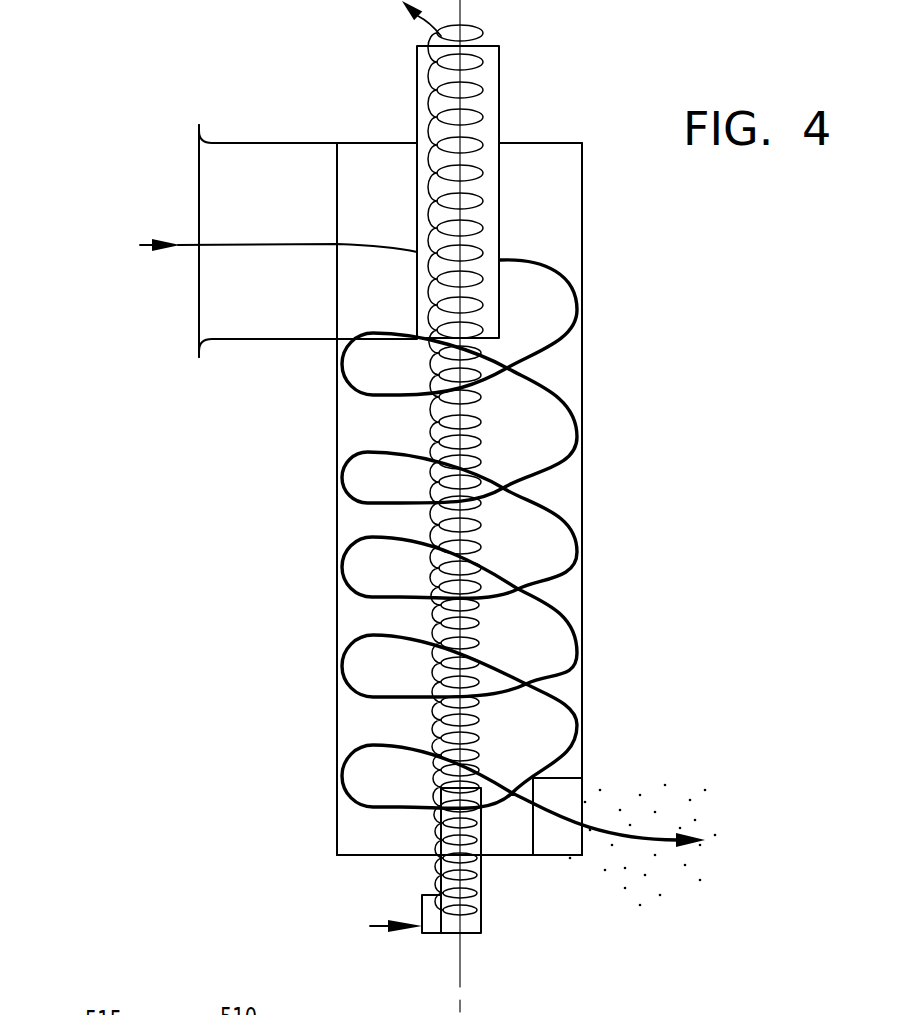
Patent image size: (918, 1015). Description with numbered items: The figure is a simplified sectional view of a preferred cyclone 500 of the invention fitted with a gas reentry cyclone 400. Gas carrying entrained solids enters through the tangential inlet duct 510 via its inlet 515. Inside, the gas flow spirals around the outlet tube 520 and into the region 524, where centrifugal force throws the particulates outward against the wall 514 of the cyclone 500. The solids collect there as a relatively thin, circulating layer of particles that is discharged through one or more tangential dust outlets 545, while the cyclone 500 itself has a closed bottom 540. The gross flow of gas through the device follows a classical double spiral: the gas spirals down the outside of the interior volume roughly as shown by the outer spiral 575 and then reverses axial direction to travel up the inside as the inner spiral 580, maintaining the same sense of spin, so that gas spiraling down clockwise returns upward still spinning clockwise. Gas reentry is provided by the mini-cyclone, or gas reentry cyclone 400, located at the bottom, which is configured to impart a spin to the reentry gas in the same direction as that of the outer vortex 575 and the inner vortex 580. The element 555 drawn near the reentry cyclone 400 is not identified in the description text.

The reentry cyclone 400 is at (482, 881).
The cyclone 500 is at (625, 530).
The tangential inlet duct 510 is at (267, 340).
The wall 514 is at (582, 617).
The inlet 515 is at (199, 297).
The outlet tube 520 is at (500, 103).
The region 524 is at (548, 218).
The closed bottom 540 is at (363, 856).
The tangential dust outlet 545 is at (583, 783).
The purge gas inlet 555 is at (448, 908).
The spiral 575 is at (553, 452).
The spiral 580 is at (440, 432).